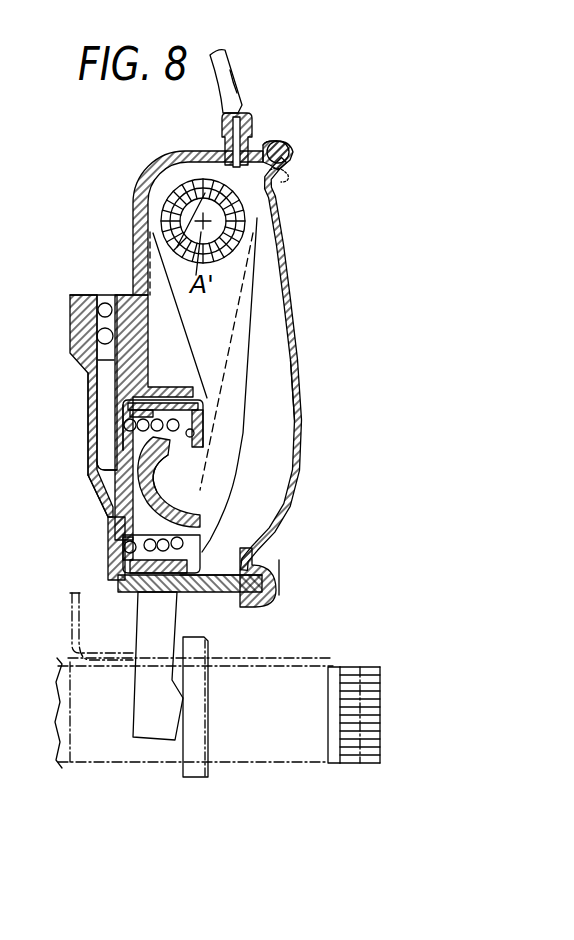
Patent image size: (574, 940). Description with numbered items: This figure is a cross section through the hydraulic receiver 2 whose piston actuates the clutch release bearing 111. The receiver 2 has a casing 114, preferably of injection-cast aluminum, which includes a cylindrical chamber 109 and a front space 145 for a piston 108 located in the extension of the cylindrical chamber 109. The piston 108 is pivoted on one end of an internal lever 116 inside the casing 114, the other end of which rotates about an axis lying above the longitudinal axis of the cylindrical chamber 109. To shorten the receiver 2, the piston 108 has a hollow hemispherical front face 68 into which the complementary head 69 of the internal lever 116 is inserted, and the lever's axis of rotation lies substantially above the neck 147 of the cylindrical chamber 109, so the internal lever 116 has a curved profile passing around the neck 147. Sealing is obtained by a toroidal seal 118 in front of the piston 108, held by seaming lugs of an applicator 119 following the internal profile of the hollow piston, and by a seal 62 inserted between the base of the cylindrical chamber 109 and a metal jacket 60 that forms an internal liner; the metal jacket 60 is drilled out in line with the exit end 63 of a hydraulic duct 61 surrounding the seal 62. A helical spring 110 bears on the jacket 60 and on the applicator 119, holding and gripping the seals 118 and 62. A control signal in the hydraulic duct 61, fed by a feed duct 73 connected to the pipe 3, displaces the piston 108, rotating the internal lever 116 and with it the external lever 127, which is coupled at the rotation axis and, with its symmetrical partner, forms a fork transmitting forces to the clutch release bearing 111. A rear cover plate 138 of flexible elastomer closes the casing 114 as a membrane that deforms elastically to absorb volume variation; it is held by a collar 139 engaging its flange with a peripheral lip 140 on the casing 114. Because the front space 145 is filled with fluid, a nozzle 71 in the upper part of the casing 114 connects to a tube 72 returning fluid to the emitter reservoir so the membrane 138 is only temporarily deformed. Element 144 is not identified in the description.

The receiver 2 is at (328, 260).
The pipe 3 is at (100, 336).
The metal jacket 60 is at (137, 405).
The hydraulic duct 61 is at (103, 479).
The seal 62 is at (140, 431).
The exit end of hydraulic duct 63 is at (97, 470).
The front face of piston 68 is at (190, 433).
The head of internal lever 69 is at (188, 495).
The nozzle 71 is at (222, 140).
The tube 72 is at (236, 92).
The feed duct 73 is at (100, 378).
The piston 108 is at (175, 590).
The cylindrical chamber 109 is at (175, 468).
The helical spring 110 is at (115, 550).
The clutch release bearing 111 is at (202, 777).
The casing 114 is at (132, 236).
The internal lever 116 is at (248, 353).
The seal 118 is at (130, 592).
The applicator 119 is at (170, 390).
The external lever 127 is at (152, 735).
The rear cover plate 138 is at (305, 440).
The collar 139 is at (284, 143).
The peripheral lip 140 is at (268, 142).
The spacer 144 is at (117, 527).
The front space 145 is at (270, 452).
The neck of cylindrical chamber 147 is at (195, 403).